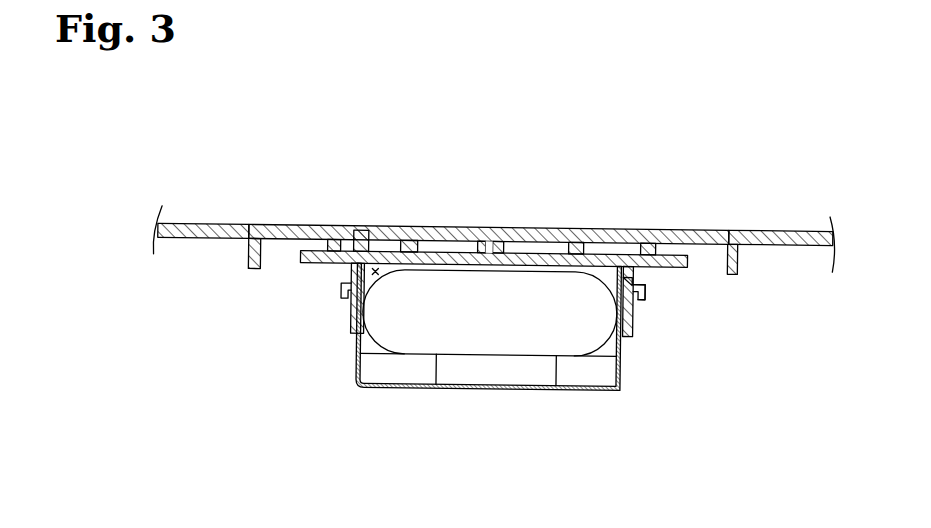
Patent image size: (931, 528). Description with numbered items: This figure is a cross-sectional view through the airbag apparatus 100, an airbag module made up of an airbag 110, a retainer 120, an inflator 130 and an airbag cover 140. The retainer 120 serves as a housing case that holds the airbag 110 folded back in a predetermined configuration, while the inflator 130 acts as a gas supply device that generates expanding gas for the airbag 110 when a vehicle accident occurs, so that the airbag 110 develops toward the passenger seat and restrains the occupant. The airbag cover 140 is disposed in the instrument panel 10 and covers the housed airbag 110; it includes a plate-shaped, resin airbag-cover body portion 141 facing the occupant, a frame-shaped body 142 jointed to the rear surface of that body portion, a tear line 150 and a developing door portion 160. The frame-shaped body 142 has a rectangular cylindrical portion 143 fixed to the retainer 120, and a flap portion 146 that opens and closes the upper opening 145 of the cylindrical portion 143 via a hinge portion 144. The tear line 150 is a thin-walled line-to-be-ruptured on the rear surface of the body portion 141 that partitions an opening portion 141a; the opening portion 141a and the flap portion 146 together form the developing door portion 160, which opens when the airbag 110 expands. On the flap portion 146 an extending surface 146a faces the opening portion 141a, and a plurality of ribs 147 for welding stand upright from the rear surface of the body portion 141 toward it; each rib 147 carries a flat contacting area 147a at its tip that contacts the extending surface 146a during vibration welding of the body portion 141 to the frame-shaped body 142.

The instrument panel 10 is at (195, 223).
The airbag apparatus 100 is at (494, 283).
The airbag 110 is at (599, 364).
The retainer 120 is at (545, 352).
The inflator 130 is at (522, 375).
The airbag cover 140 is at (493, 173).
The airbag-cover body portion 141 is at (508, 235).
The opening portion 141a is at (474, 243).
The frame-shaped body 142 is at (645, 322).
The cylindrical portion 143 is at (350, 315).
The hinge portion 144 is at (635, 278).
The upper opening 145 is at (360, 236).
The flap portion 146 is at (384, 247).
The extending surface 146a is at (485, 233).
The rib for welding 147 is at (630, 238).
The contacting area 147a is at (584, 240).
The tear line 150 is at (352, 266).
The developing door portion 160 is at (495, 127).